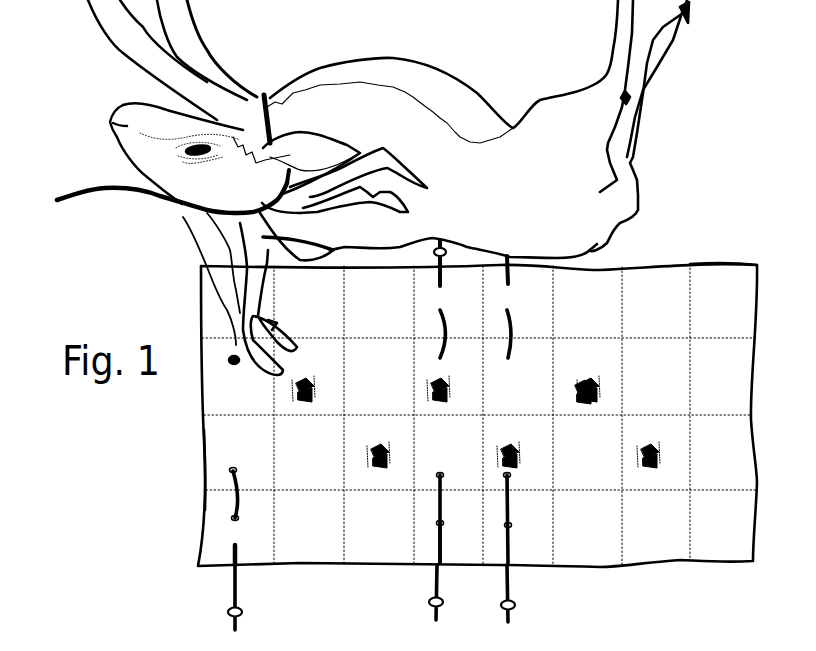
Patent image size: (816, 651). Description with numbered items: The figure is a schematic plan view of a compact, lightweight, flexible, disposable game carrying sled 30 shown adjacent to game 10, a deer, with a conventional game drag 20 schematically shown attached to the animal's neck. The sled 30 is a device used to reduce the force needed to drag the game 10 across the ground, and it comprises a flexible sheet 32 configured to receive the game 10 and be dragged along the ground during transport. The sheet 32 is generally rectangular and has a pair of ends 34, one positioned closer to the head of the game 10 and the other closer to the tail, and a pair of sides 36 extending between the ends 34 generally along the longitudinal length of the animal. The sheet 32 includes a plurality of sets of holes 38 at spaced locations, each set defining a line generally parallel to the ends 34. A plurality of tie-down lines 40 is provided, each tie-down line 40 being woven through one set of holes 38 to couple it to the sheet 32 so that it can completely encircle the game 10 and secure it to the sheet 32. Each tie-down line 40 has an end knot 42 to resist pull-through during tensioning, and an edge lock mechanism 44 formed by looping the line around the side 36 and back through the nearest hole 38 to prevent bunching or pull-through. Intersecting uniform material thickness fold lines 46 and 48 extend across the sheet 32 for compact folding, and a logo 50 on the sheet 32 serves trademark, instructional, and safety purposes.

The game 10 is at (490, 194).
The game drag 20 is at (147, 197).
The game carrying sled 30 is at (138, 528).
The flexible sheet 32 is at (594, 313).
The end 34 is at (202, 462).
The side 36 is at (672, 263).
The hole 38 is at (237, 472).
The tie-down line 40 is at (512, 345).
The end knot 42 is at (225, 612).
The edge lock mechanism 44 is at (437, 547).
The fold line 46 is at (403, 410).
The fold line 48 is at (412, 320).
The logo 50 is at (600, 380).